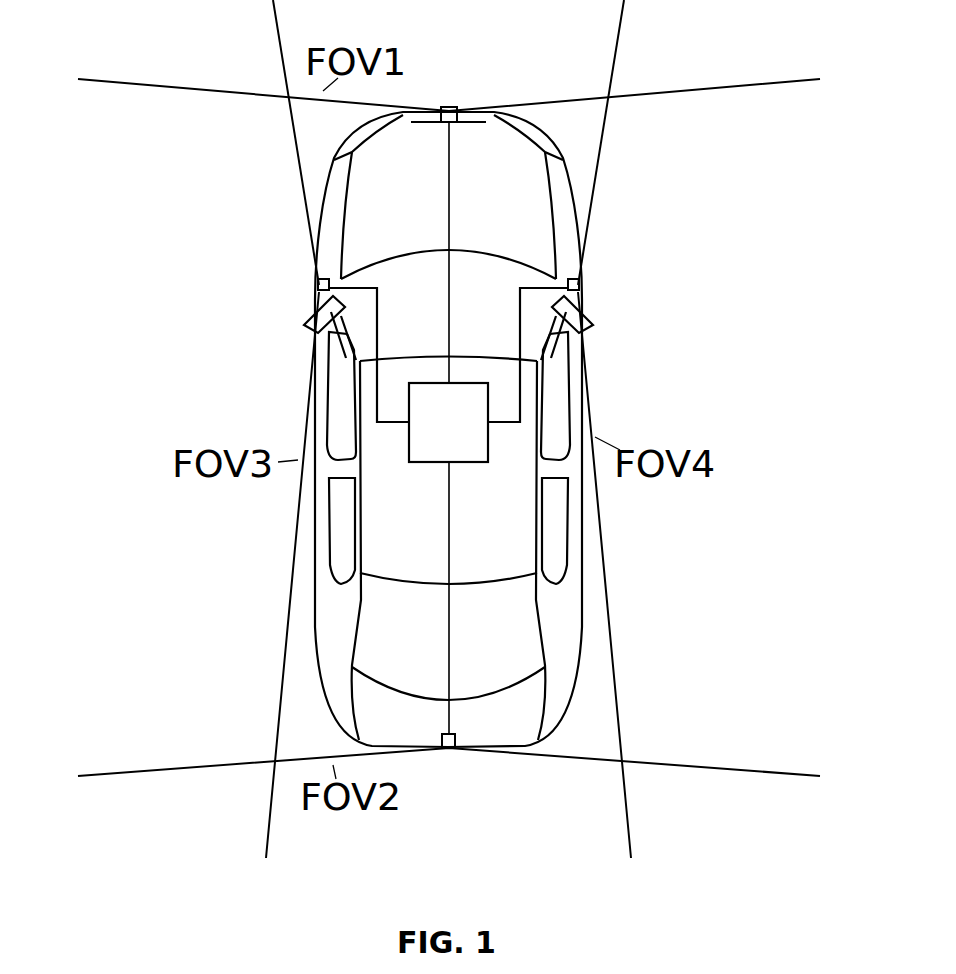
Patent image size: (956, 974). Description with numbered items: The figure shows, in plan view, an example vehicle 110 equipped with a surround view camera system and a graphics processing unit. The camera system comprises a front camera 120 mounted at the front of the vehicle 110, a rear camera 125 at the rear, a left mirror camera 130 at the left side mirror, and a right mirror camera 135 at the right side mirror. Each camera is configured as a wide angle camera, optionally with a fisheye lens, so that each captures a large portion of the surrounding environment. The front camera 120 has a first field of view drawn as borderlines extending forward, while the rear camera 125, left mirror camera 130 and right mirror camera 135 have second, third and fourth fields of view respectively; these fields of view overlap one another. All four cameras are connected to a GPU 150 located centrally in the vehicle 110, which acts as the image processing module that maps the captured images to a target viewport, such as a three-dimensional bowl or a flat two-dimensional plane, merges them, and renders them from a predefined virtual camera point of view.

The vehicle 110 is at (579, 200).
The front camera 120 is at (452, 106).
The rear camera 125 is at (450, 750).
The left mirror camera 130 is at (315, 289).
The right mirror camera 135 is at (583, 290).
The GPU 150 is at (468, 463).